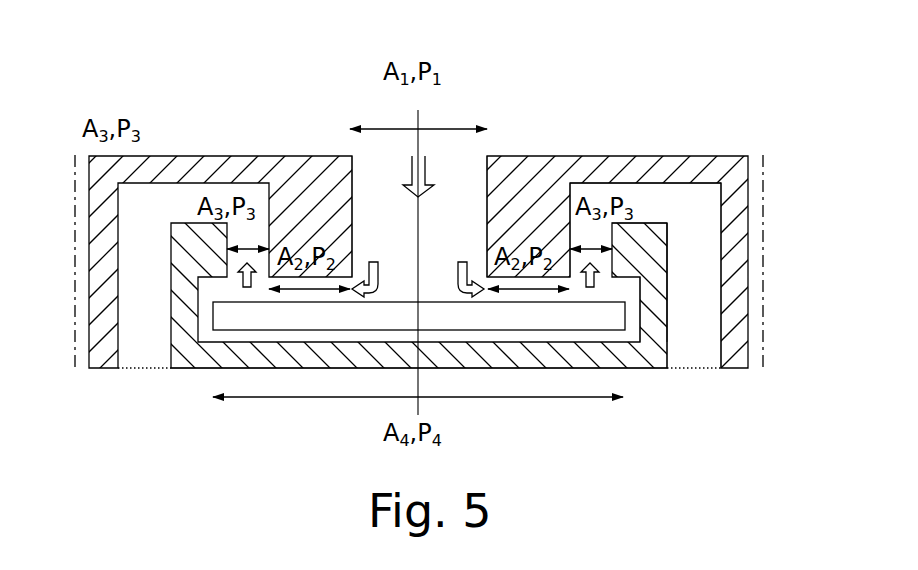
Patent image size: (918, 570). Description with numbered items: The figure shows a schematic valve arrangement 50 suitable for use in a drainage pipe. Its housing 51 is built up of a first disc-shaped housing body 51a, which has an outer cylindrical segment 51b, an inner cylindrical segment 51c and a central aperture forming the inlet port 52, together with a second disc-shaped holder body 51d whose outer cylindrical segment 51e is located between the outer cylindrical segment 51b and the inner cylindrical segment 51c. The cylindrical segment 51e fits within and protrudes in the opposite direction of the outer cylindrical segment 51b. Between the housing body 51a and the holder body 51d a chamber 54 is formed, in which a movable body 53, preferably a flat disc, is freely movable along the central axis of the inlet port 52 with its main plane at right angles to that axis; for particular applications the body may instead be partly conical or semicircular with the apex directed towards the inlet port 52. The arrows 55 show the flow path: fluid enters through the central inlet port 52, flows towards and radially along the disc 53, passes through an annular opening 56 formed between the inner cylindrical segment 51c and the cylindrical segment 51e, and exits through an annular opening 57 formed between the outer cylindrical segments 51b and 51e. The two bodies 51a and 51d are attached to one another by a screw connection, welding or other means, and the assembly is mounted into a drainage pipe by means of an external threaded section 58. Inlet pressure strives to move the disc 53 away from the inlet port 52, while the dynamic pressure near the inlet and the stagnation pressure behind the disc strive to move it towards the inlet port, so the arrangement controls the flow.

The valve arrangement 50 is at (226, 99).
The housing 51 is at (698, 155).
The first disc-shaped housing body 51a is at (630, 167).
The outer cylindrical segment 51b is at (737, 243).
The inner cylindrical segment 51c is at (300, 192).
The second disc-shaped holder body 51d is at (607, 355).
The outer cylindrical segment 51e is at (658, 305).
The inlet port 52 is at (462, 188).
The movable body 53 is at (240, 317).
The chamber 54 is at (227, 292).
The arrows 55 is at (413, 173).
The annular opening 56 is at (603, 262).
The annular opening 57 is at (703, 223).
The external threaded section 58 is at (73, 267).